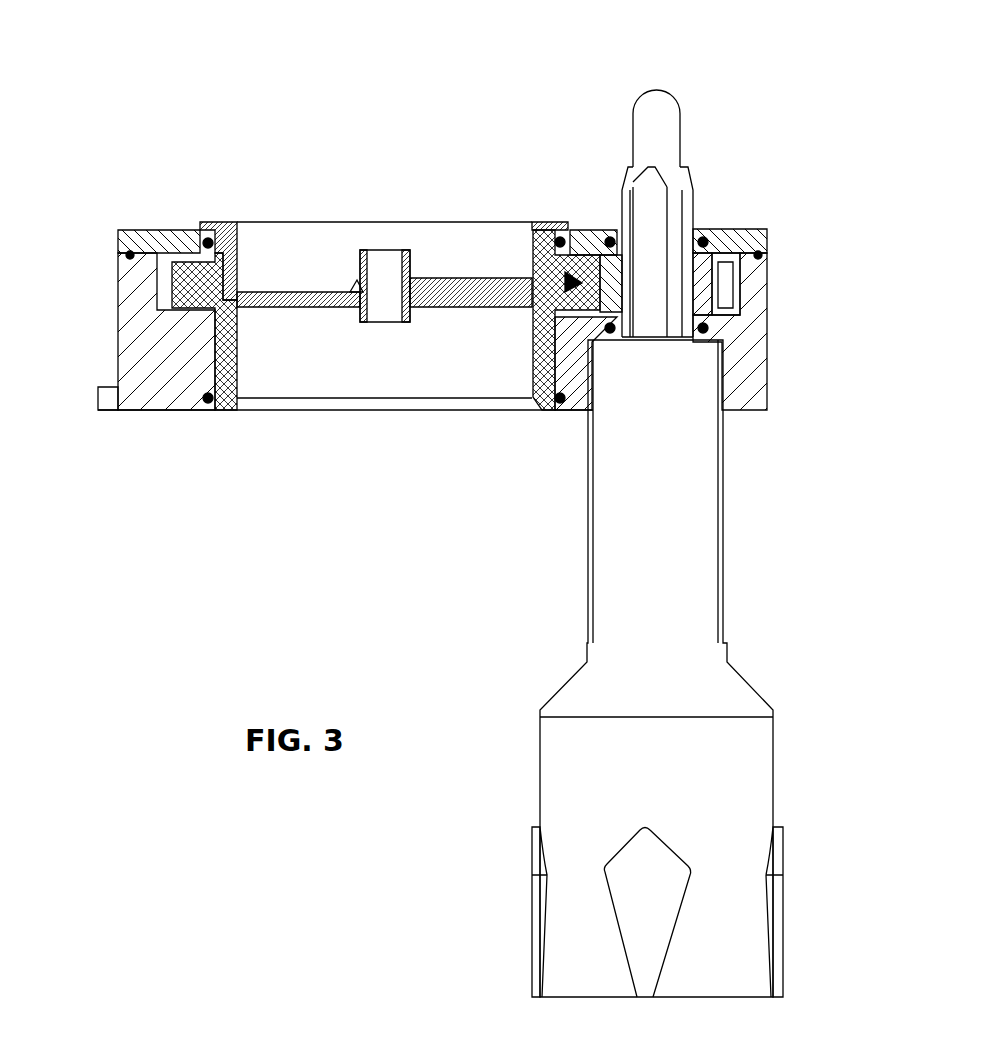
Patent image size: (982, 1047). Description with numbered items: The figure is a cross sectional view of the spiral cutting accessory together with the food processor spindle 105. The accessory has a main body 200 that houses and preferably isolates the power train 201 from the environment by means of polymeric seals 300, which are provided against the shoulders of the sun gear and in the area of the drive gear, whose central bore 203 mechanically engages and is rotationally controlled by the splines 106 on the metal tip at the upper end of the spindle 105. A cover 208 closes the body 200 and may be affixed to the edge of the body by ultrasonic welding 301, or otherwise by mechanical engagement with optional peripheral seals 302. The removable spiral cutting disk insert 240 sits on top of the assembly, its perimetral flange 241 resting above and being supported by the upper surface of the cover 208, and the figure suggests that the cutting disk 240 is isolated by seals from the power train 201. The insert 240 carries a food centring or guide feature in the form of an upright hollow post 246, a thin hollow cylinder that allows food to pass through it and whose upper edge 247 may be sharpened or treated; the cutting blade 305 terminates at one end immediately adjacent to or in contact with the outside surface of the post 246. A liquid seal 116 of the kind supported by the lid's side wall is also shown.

The food processor spindle 105 is at (697, 575).
The splines 106 is at (688, 210).
The liquid seal 116 is at (112, 410).
The main body 200 is at (173, 410).
The power train 201 is at (587, 230).
The central bore 203 is at (700, 265).
The cover 208 is at (170, 235).
The spiral cutting disk insert 240 is at (553, 222).
The perimetral flange 241 is at (213, 230).
The hollow post 246 is at (407, 272).
The sharpened upper edge 247 is at (367, 250).
The polymeric seals 300 is at (708, 328).
The ultrasonic welding 301 is at (127, 255).
The peripheral seals 302 is at (762, 255).
The cutting blade 305 is at (312, 308).